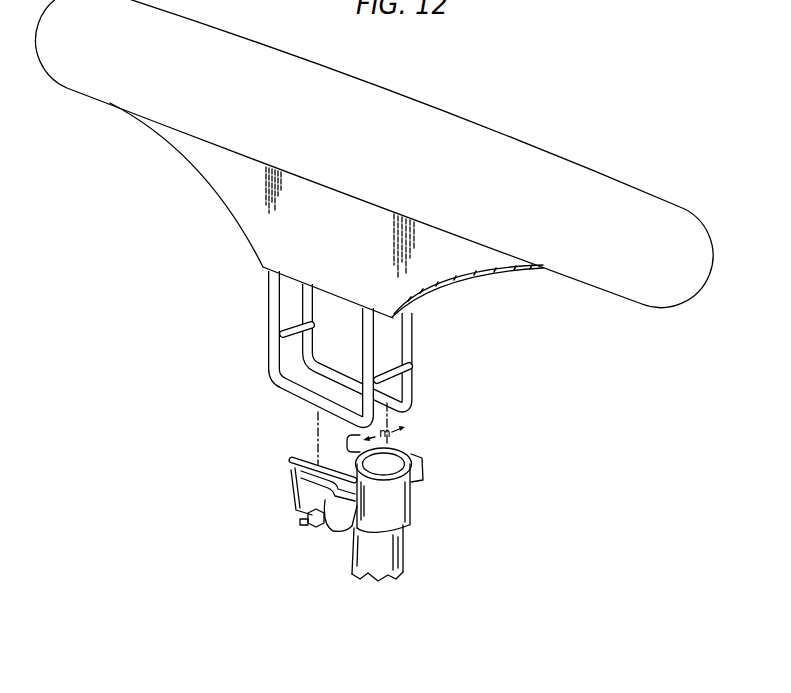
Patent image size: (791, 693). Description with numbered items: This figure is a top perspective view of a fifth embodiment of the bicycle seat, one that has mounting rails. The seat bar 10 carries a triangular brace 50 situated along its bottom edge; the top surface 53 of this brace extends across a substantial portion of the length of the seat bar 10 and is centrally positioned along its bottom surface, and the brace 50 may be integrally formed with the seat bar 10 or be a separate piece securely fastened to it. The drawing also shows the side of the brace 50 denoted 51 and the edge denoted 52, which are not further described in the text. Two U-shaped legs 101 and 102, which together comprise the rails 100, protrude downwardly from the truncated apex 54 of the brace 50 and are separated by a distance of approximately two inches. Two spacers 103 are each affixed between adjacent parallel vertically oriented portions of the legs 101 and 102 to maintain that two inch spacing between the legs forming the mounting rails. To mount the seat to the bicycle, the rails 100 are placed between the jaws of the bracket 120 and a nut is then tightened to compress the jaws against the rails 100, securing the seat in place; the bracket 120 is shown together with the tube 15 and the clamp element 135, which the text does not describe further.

The seat bar 10 is at (425, 98).
The tube 15 is at (405, 555).
The triangular brace 50 is at (326, 215).
The plate edge 51 is at (210, 183).
The plate ridge 52 is at (447, 295).
The top surface 53 is at (293, 172).
The truncated apex 54 is at (324, 291).
The rails 100 is at (336, 347).
The U-shaped leg 101 is at (337, 382).
The U-shaped leg 102 is at (316, 403).
The spacer 103 is at (290, 330).
The bracket 120 is at (382, 498).
The clamp lever 135 is at (309, 530).